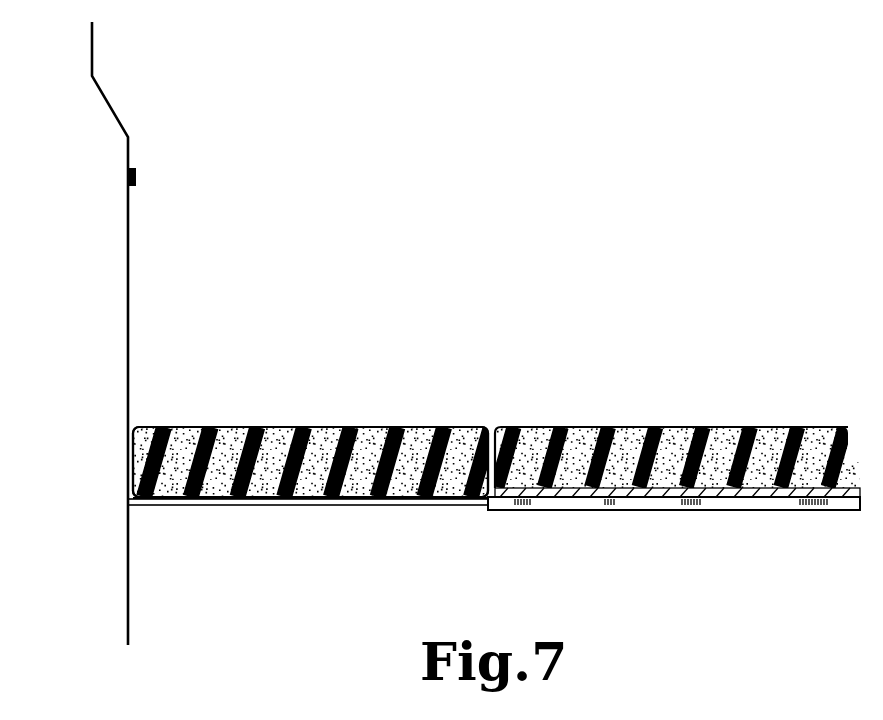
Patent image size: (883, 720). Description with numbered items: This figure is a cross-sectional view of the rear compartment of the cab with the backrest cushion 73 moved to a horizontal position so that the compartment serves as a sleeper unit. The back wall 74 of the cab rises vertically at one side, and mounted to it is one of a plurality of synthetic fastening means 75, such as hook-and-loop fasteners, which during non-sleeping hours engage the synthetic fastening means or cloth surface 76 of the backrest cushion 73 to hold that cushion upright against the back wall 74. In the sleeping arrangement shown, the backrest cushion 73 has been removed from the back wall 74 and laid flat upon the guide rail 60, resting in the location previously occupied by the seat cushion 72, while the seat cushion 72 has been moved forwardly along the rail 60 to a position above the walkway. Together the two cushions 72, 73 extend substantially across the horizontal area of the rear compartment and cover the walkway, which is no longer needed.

The guide rail 60 is at (443, 506).
The seat cushion 72 is at (680, 426).
The backrest cushion 73 is at (380, 426).
The back wall 74 is at (128, 313).
The synthetic fastening means 75 is at (136, 184).
The synthetic fastening means or cloth surface 76 is at (333, 499).